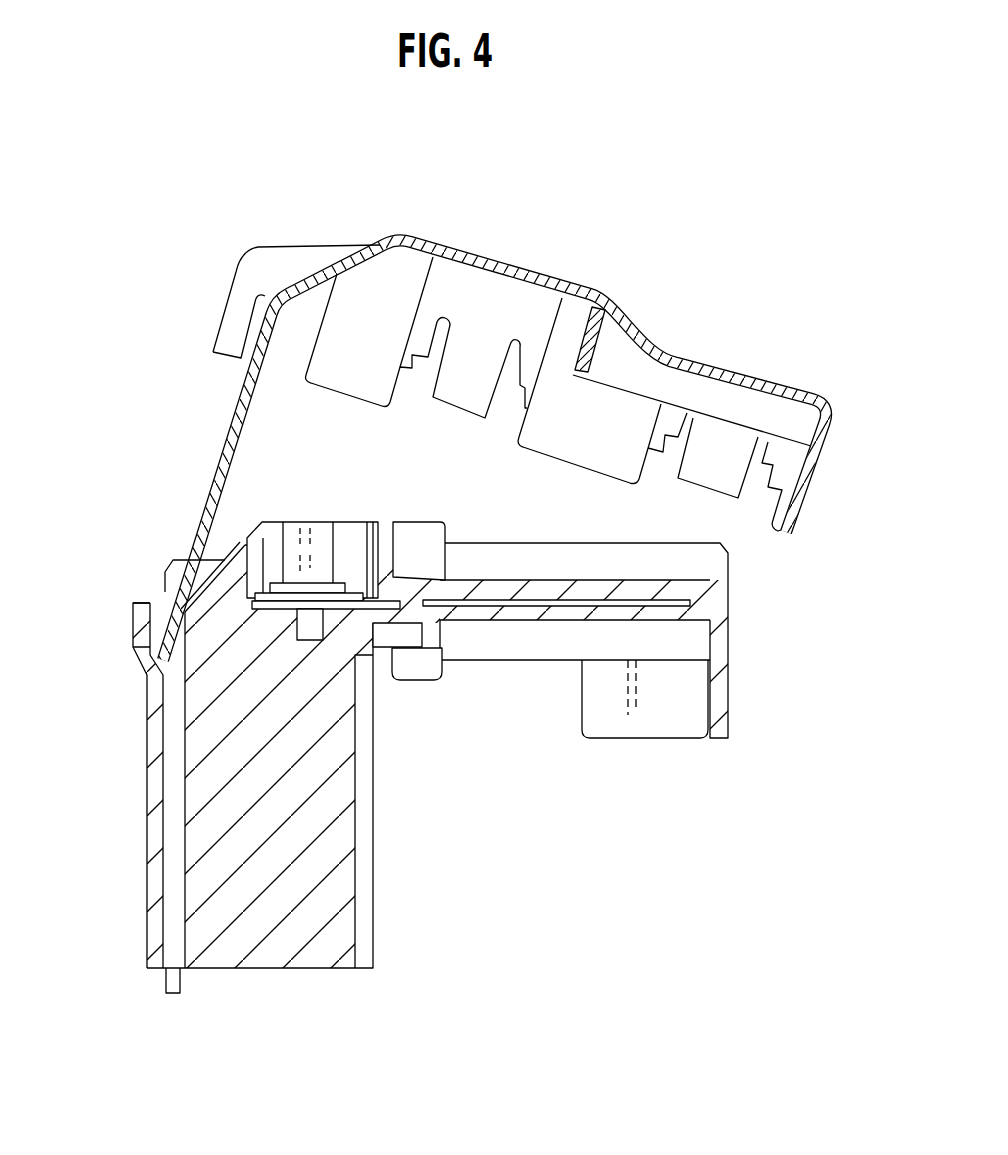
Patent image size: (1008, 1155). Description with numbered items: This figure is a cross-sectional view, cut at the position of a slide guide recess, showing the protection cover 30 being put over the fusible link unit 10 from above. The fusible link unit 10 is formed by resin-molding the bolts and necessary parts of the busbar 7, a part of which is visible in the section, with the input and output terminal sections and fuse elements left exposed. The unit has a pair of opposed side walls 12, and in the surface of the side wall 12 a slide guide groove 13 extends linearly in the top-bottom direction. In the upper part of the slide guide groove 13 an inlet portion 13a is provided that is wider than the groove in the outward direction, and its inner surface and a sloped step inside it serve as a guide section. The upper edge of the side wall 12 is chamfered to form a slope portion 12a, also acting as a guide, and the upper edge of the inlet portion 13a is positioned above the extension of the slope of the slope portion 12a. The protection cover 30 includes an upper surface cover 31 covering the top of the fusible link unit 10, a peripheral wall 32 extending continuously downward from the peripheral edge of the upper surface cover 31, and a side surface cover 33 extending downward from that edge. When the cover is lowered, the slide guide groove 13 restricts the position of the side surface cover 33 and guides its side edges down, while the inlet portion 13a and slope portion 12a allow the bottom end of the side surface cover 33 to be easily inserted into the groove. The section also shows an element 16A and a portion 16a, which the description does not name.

The protection cover 30 is at (584, 252).
The upper surface cover 31 is at (494, 260).
The peripheral wall 32 is at (235, 283).
The side surface cover 33 is at (221, 462).
The fusible link unit 10 is at (752, 648).
The side wall 12 is at (150, 925).
The slope portion 12a is at (228, 563).
The slide guide groove 13 is at (173, 800).
The inlet portion 13a is at (148, 625).
The connector housing 16A is at (355, 525).
The connector opening 16a is at (302, 524).
The busbar 7 is at (500, 607).